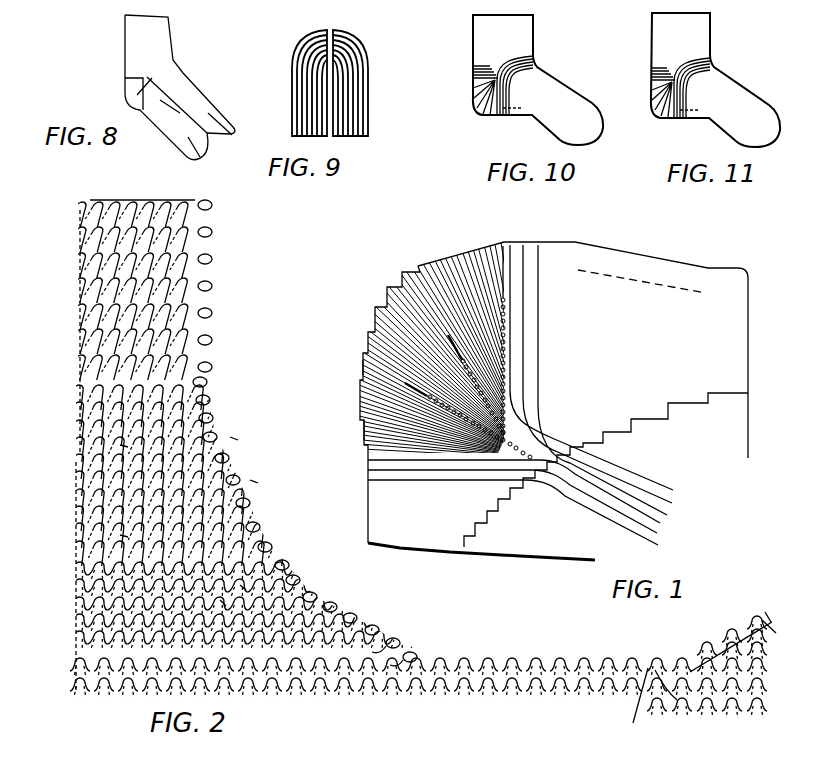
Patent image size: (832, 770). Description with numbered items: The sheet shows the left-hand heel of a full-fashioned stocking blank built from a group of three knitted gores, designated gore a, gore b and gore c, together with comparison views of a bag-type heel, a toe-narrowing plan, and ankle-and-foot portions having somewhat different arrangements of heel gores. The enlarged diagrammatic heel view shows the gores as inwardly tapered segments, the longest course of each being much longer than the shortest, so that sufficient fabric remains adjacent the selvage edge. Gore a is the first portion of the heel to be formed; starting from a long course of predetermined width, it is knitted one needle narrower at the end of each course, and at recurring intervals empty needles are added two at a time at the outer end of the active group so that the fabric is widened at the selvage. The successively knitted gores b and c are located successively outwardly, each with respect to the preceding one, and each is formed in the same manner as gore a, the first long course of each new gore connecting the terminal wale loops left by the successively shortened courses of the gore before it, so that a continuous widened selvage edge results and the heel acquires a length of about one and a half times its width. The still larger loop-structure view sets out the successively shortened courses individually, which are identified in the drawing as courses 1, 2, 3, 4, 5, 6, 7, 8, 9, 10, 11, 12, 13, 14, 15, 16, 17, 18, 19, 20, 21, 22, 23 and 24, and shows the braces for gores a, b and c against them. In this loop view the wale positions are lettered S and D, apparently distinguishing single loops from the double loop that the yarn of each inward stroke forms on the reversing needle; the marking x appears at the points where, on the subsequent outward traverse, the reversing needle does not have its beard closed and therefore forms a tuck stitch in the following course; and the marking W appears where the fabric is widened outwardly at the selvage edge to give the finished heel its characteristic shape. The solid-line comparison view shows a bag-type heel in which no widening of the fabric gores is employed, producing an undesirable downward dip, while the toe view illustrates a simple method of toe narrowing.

In FIG. 2, the course 1 is at (428, 641).
In FIG. 2, the course 2 is at (388, 638).
In FIG. 2, the course 3 is at (248, 631).
In FIG. 2, the course 4 is at (248, 617).
In FIG. 2, the course 5 is at (248, 603).
In FIG. 2, the course 6 is at (248, 589).
In FIG. 2, the course 7 is at (248, 573).
In FIG. 2, the course 8 is at (227, 555).
In FIG. 2, the course 9 is at (227, 537).
In FIG. 2, the course 10 is at (226, 519).
In FIG. 2, the course 11 is at (227, 501).
In FIG. 2, the course 12 is at (227, 482).
In FIG. 2, the course 13 is at (226, 462).
In FIG. 2, the course 14 is at (227, 444).
In FIG. 2, the course 15 is at (226, 427).
In FIG. 2, the course 16 is at (226, 410).
In FIG. 2, the course 17 is at (226, 392).
In FIG. 2, the course 18 is at (145, 367).
In FIG. 2, the course 19 is at (145, 341).
In FIG. 2, the course 20 is at (145, 316).
In FIG. 2, the course 21 is at (145, 290).
In FIG. 2, the course 22 is at (145, 265).
In FIG. 2, the course 23 is at (145, 239).
In FIG. 2, the course 24 is at (145, 213).
In FIG. 1, the first heel segment or gore a is at (360, 458).
In FIG. 2, the first heel segment or gore a is at (74, 690).
In FIG. 1, the second heel segment or gore b is at (416, 262).
In FIG. 2, the second heel segment or gore b is at (82, 212).
In FIG. 1, the third heel segment or gore c is at (503, 242).
In FIG. 2, the third heel segment or gore c is at (200, 200).
In FIG. 2, the single stitch wale S is at (409, 688).
In FIG. 2, the double stitch wale D is at (439, 672).
In FIG. 2, the widened stitch W is at (250, 507).
In FIG. 2, the transfer stitch x is at (214, 590).